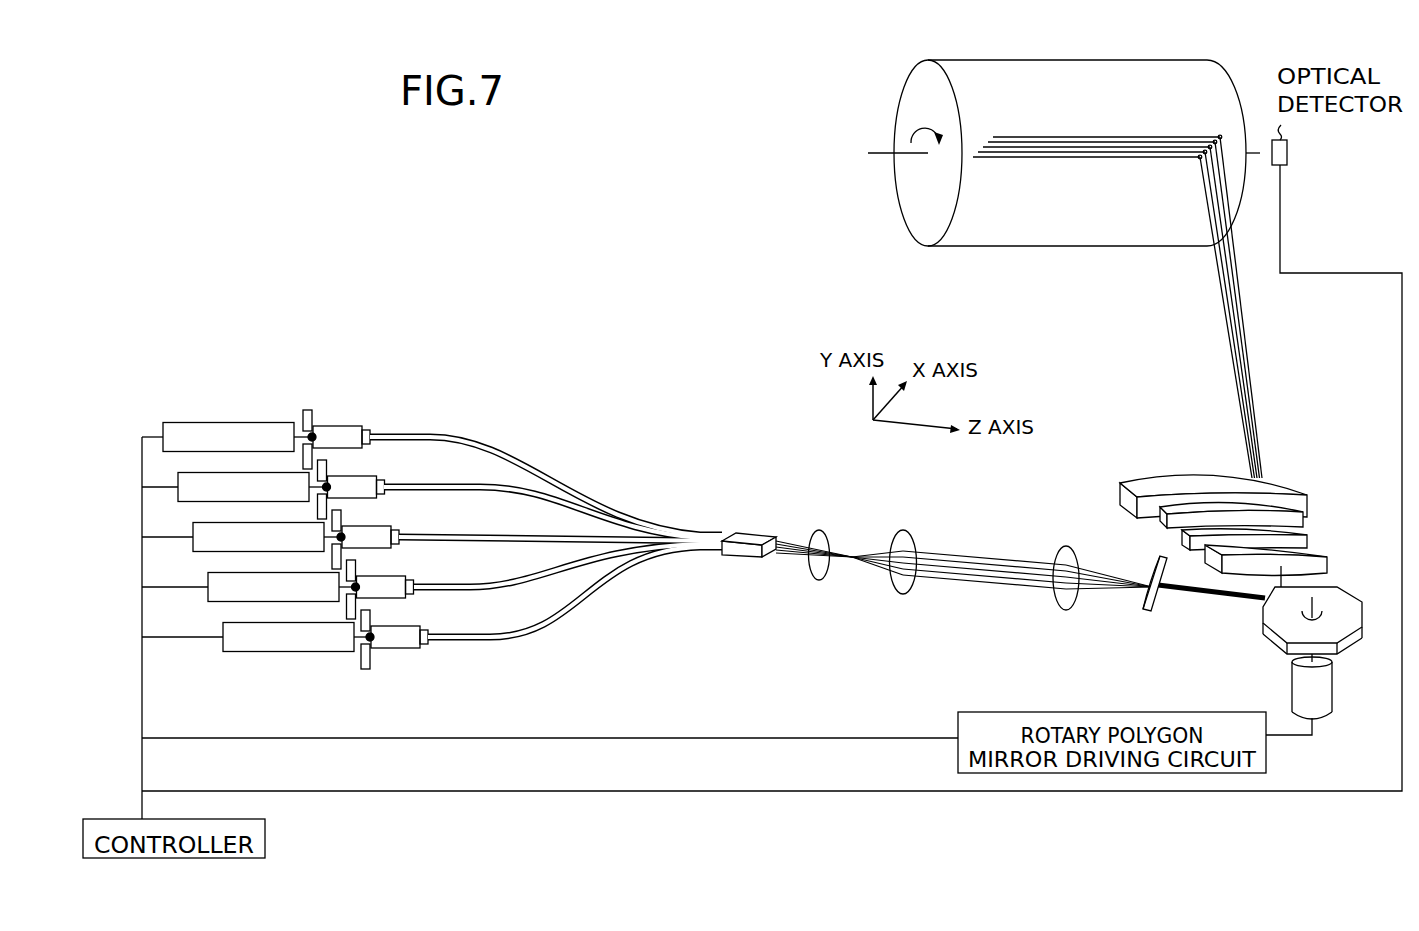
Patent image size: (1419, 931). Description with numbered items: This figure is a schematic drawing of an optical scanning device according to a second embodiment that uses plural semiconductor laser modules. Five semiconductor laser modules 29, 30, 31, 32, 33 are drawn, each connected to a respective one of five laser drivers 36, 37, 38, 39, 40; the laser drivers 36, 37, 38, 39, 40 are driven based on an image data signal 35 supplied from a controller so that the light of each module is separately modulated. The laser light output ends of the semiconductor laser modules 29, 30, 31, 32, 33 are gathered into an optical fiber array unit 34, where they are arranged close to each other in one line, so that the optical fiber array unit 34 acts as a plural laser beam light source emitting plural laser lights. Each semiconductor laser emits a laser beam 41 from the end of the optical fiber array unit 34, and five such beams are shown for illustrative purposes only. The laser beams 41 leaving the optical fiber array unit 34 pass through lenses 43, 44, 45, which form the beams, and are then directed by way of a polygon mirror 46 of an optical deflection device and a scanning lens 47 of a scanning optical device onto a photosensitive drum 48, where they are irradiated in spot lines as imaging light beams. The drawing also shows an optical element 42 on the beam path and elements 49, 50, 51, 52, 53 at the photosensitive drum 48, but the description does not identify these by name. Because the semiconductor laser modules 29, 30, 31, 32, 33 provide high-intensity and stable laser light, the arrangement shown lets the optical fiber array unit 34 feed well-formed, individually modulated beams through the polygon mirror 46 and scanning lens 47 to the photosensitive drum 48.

The semiconductor laser module 29 is at (357, 431).
The semiconductor laser module 30 is at (378, 481).
The semiconductor laser module 31 is at (395, 530).
The semiconductor laser module 32 is at (405, 580).
The semiconductor laser module 33 is at (422, 626).
The optical fiber array unit 34 is at (744, 535).
The image data signal 35 is at (142, 664).
The laser driver 36 is at (233, 424).
The laser driver 37 is at (248, 474).
The laser driver 38 is at (263, 524).
The laser driver 39 is at (278, 574).
The laser driver 40 is at (293, 624).
The laser beam 41 is at (793, 550).
The collimator lens 42 is at (820, 532).
The lens 43 is at (905, 540).
The lens 44 is at (1068, 556).
The lens 45 is at (1152, 612).
The polygon mirror 46 is at (1340, 642).
The scanning lens 47 is at (1303, 480).
The photosensitive drum 48 is at (991, 237).
The beam spot 49 is at (1206, 137).
The beam spot 50 is at (1116, 247).
The beam spot 51 is at (1120, 247).
The beam spot 52 is at (1133, 247).
The beam spot 53 is at (1154, 247).